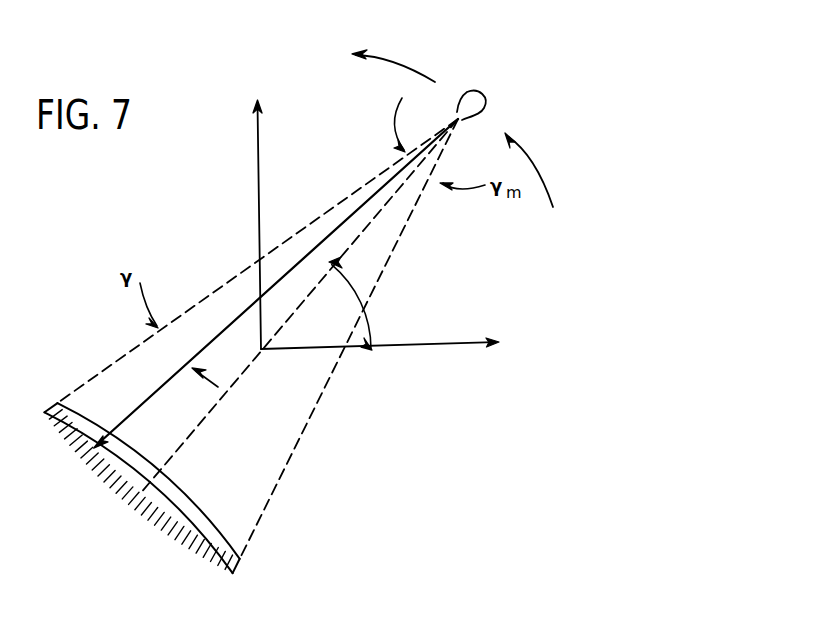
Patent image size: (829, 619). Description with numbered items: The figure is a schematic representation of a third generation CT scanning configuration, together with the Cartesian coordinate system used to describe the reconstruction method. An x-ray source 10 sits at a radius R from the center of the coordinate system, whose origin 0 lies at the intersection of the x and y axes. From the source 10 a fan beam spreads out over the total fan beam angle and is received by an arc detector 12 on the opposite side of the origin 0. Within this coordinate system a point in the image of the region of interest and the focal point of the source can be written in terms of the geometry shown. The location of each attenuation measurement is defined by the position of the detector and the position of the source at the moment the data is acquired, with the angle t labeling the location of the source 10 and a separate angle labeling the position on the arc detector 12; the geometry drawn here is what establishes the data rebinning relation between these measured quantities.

The x-ray source 10 is at (467, 92).
The arc detector 12 is at (129, 510).
The coordinate origin 0 is at (377, 231).
The radius R is at (276, 283).
The source location parameter t is at (350, 303).